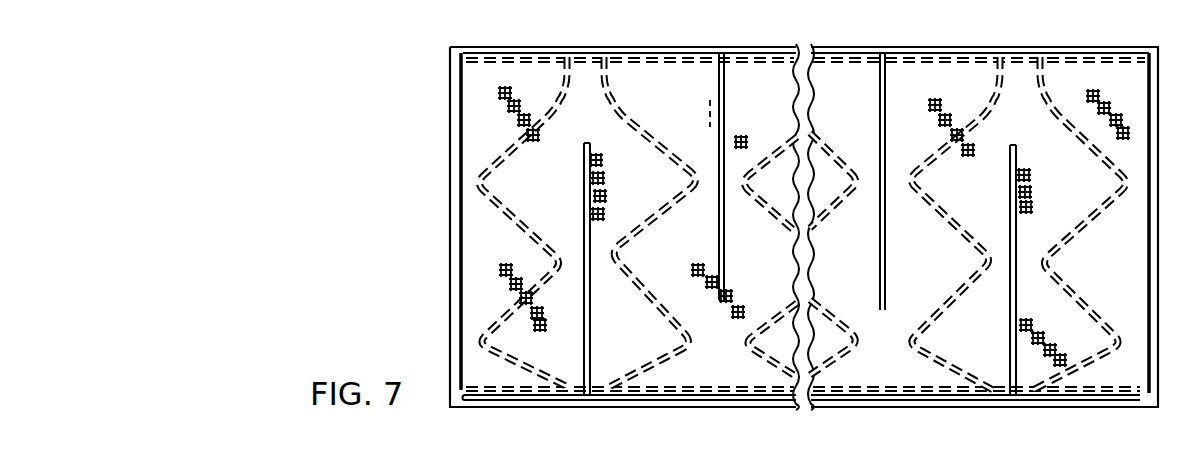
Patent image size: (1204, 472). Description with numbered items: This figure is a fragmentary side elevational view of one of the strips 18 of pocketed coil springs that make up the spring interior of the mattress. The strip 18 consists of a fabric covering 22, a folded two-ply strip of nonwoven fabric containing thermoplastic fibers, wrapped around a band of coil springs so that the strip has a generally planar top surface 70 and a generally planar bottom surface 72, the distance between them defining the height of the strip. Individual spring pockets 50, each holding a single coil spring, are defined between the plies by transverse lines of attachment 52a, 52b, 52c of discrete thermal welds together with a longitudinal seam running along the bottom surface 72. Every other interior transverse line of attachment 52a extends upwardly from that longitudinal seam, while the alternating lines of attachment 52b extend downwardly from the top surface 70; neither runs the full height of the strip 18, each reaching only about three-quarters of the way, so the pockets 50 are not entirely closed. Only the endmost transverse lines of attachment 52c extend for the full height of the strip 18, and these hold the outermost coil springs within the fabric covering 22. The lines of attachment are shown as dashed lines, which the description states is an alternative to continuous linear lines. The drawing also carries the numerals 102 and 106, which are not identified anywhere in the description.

The strip 18 is at (712, 436).
The fabric covering 22 is at (632, 83).
The spring pocket 50 is at (745, 43).
The transverse line of attachment 52a is at (590, 333).
The transverse line of attachment 52b is at (720, 90).
The endmost transverse line of attachment 52c is at (452, 320).
The top surface 70 is at (1034, 50).
The bottom surface 72 is at (933, 400).
The component 102 is at (340, 462).
The component 106 is at (816, 465).